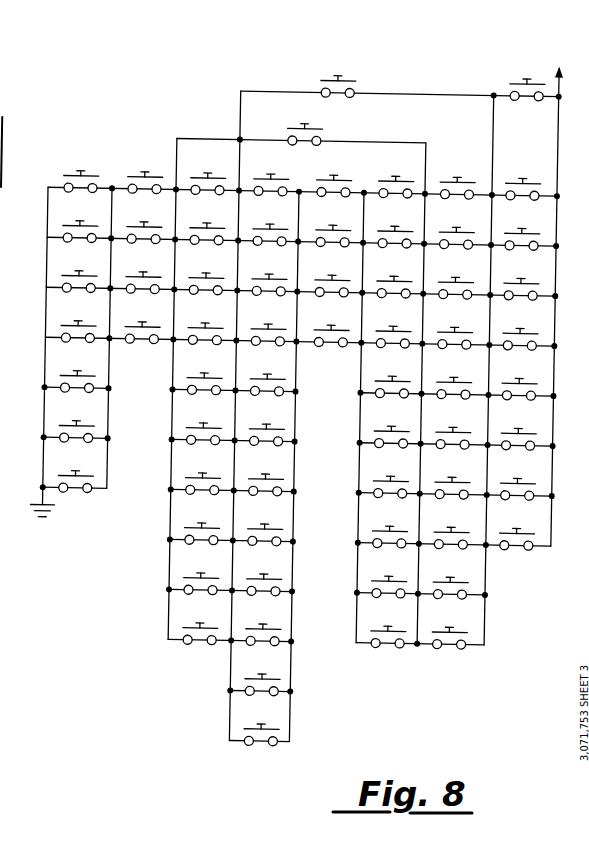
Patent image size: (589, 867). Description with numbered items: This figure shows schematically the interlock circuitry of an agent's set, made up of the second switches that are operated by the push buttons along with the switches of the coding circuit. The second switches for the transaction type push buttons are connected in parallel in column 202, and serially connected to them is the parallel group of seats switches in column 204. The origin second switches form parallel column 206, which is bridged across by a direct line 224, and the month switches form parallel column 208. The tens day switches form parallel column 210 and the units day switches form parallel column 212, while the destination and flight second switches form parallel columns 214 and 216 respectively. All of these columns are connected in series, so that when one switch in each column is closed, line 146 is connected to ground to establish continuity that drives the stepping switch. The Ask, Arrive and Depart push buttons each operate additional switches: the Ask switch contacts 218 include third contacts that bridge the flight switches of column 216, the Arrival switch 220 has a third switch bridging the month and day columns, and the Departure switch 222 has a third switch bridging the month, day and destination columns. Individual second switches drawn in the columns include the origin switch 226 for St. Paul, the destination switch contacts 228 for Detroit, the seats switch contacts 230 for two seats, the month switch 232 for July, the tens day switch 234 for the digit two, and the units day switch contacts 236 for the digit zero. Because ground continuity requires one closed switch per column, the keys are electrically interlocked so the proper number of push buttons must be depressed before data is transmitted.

The line 146 is at (555, 78).
The transaction switch column 202 is at (75, 535).
The seats switch column 204 is at (146, 341).
The origin switch column 206 is at (207, 411).
The month switch column 208 is at (287, 478).
The tens day switch column 210 is at (331, 394).
The units day switch column 212 is at (393, 432).
The destination switch column 214 is at (460, 409).
The flight switch column 216 is at (512, 560).
The Ask switch contacts 218 is at (70, 183).
The Arrival switch 220 is at (62, 428).
The Departure switch 222 is at (62, 477).
The direct line 224 is at (176, 138).
The origin switch 226 is at (191, 177).
The destination switch contacts 228 is at (438, 436).
The seats switch contacts 230 is at (128, 228).
The month switch 232 is at (281, 484).
The tens day switch 234 is at (317, 277).
The units day switch contacts 236 is at (386, 228).